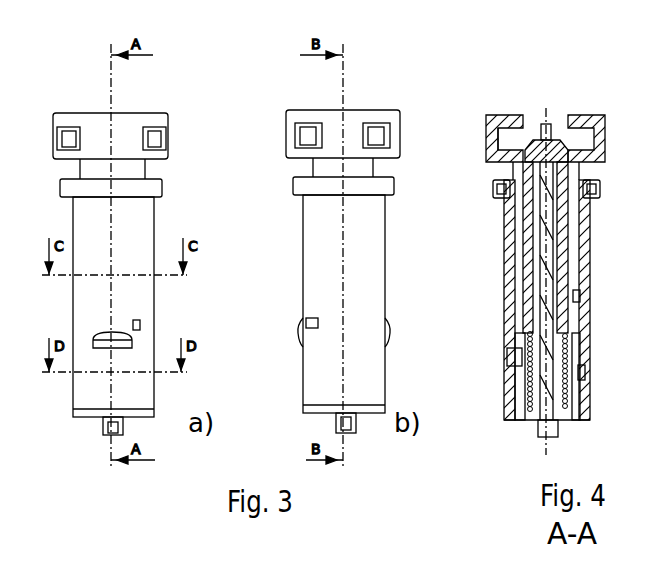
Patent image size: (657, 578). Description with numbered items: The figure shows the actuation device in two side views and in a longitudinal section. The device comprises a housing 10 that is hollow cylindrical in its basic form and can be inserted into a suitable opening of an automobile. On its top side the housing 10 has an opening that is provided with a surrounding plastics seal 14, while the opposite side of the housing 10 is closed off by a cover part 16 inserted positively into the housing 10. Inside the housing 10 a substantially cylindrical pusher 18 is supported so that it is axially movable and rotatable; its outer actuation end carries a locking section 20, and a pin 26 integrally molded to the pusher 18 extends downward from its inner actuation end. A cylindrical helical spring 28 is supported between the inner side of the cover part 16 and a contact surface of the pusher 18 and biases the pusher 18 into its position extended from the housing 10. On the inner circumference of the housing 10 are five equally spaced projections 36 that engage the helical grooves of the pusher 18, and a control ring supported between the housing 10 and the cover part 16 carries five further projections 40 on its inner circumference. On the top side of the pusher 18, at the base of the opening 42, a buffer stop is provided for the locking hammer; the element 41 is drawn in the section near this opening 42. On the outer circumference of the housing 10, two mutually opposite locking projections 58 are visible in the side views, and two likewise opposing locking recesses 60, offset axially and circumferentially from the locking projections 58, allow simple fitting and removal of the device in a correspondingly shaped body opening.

In FIG. 3, the housing 10 is at (140, 223).
In FIG. 4, the housing 10 is at (583, 238).
In FIG. 3, the plastics seal 14 is at (150, 188).
In FIG. 4, the plastics seal 14 is at (600, 192).
In FIG. 4, the cover part 16 is at (570, 415).
In FIG. 4, the pusher 18 is at (572, 278).
In FIG. 3, the locking section 20 is at (135, 125).
In FIG. 4, the locking section 20 is at (582, 118).
In FIG. 3, the pin 26 is at (104, 437).
In FIG. 4, the pin 26 is at (540, 430).
In FIG. 4, the helical spring 28 is at (530, 395).
In FIG. 4, the projections 36 is at (580, 298).
In FIG. 4, the projections of the control ring 40 is at (520, 360).
In FIG. 4, the actuating pin 41 is at (553, 140).
In FIG. 4, the opening 42 is at (525, 118).
In FIG. 3, the locking projections 58 is at (140, 322).
In FIG. 3, the locking recesses 60 is at (100, 345).